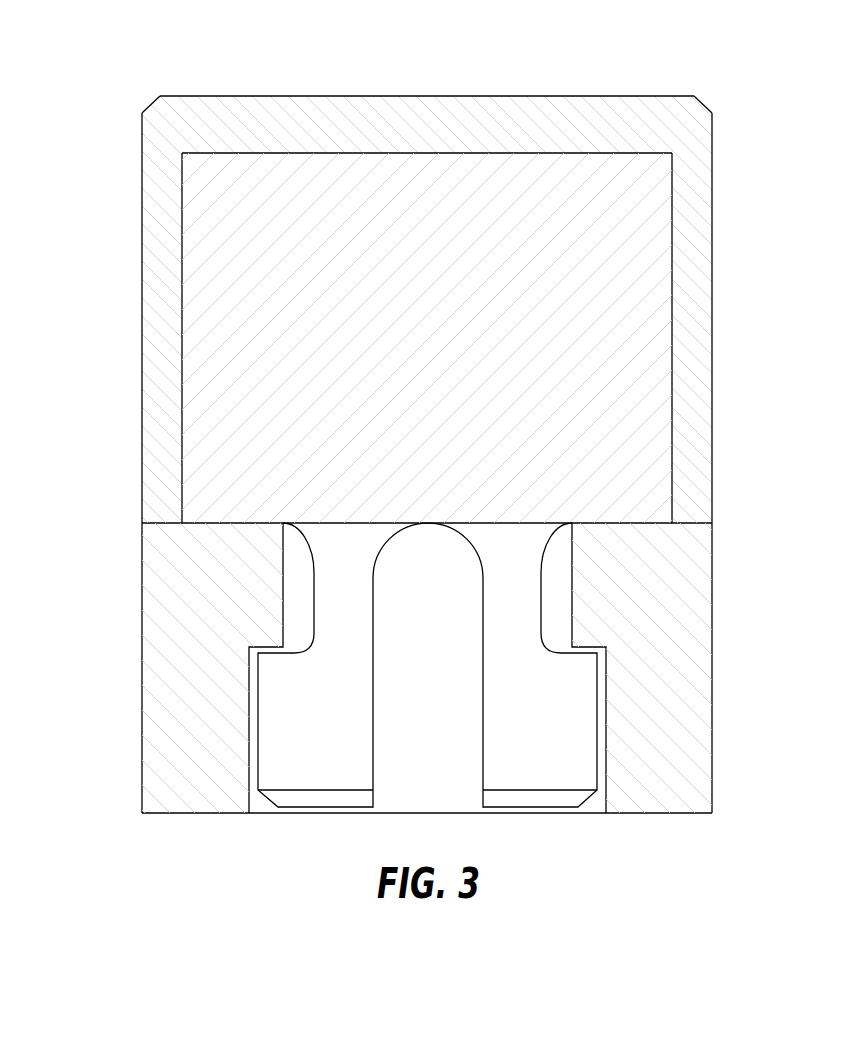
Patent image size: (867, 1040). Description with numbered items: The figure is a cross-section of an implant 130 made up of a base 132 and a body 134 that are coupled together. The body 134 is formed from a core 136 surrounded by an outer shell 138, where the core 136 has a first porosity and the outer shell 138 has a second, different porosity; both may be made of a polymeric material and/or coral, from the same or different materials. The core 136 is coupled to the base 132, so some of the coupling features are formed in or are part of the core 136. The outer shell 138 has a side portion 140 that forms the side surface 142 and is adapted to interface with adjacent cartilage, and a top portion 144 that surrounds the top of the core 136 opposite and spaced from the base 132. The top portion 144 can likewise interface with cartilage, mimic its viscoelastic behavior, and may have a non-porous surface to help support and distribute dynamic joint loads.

The implant 130 is at (672, 46).
The base 132 is at (114, 615).
The body 134 is at (113, 219).
The core 136 is at (632, 392).
The outer shell 138 is at (692, 278).
The side portion 140 is at (196, 91).
The side surface 142 is at (142, 303).
The top portion 144 is at (418, 132).